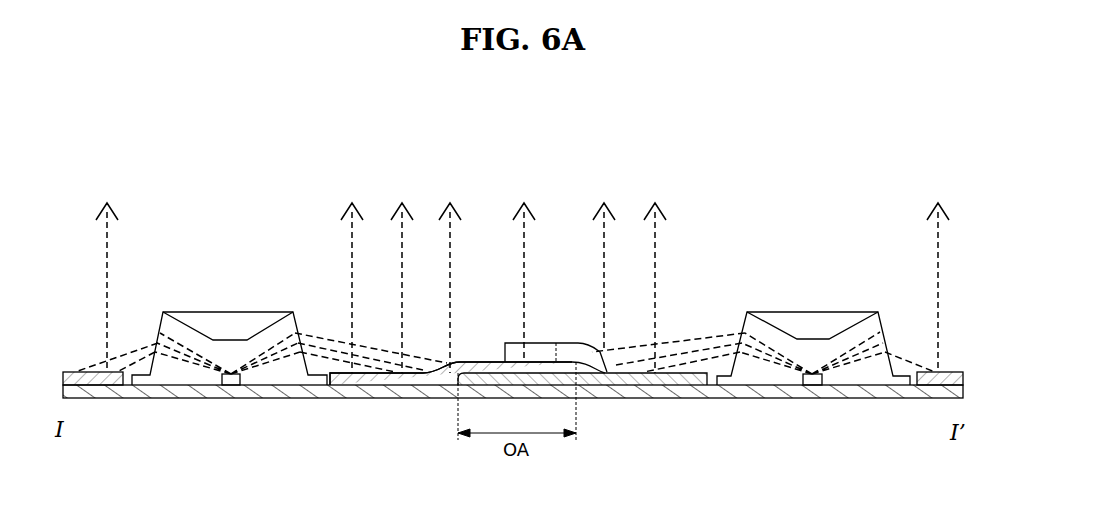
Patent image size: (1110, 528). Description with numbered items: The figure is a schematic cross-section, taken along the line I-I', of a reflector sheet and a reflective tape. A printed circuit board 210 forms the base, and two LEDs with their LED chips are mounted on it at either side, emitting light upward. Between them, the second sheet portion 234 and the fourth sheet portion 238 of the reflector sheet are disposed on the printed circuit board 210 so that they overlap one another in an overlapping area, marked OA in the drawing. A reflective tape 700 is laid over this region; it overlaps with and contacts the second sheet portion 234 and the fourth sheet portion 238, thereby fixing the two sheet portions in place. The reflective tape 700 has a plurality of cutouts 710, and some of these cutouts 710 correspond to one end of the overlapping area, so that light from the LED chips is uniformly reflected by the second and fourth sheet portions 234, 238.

The printed circuit board 210 is at (283, 402).
The second sheet portion 234 is at (373, 378).
The fourth sheet portion 238 is at (632, 402).
The reflective tape 700 is at (638, 345).
The cutouts 710 is at (578, 338).